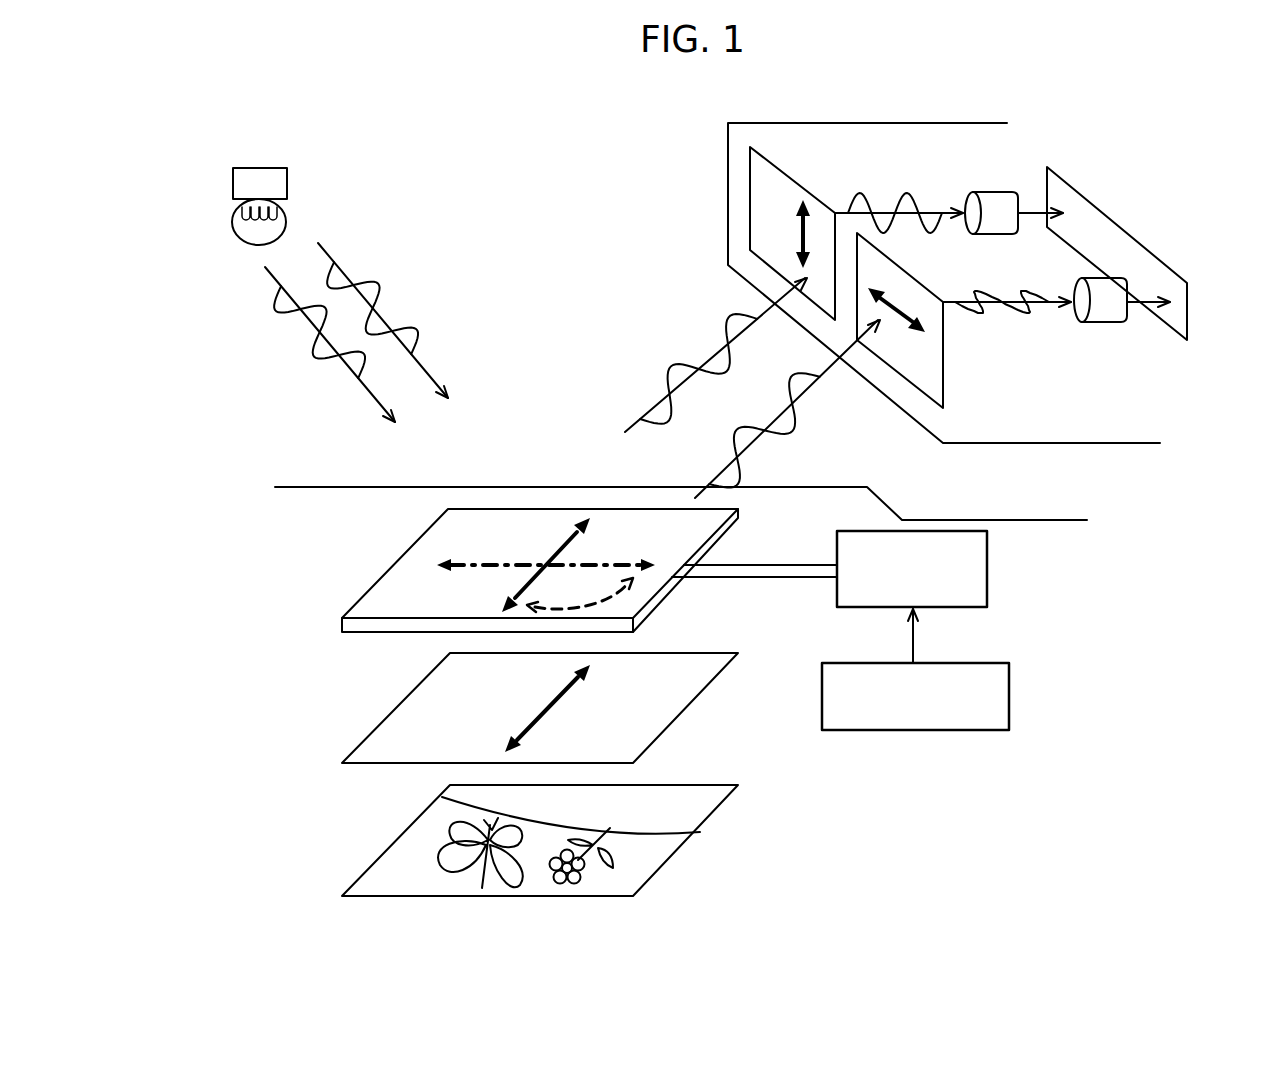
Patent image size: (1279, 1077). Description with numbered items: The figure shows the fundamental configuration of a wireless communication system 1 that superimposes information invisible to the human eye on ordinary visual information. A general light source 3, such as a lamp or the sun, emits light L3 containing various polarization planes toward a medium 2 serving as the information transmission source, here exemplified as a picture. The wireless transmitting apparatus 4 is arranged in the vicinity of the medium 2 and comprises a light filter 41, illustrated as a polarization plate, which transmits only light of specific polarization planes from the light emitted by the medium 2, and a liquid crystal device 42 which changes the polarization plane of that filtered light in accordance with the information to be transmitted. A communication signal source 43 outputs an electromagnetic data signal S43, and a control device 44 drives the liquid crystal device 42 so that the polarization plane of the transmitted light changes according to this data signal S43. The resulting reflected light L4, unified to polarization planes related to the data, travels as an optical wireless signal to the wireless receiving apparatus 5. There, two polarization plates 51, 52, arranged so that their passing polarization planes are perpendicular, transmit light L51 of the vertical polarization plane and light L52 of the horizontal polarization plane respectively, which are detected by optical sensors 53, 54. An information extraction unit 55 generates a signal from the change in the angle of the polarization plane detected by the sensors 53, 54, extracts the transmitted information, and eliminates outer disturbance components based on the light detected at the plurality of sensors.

The wireless communication system 1 is at (534, 86).
The medium 2 is at (362, 875).
The general light source 3 is at (258, 165).
The light including various polarization planes L3 is at (347, 258).
The wireless transmitting apparatus 4 is at (350, 563).
The light filter 41 is at (382, 722).
The liquid crystal device 42 is at (346, 610).
The communication signal source 43 is at (1010, 690).
The electromagnetic data signal S43 is at (914, 636).
The control device 44 is at (990, 565).
The light of specific polarization planes L4 is at (614, 411).
The wireless receiving apparatus 5 is at (742, 138).
The polarization plate 51 is at (821, 194).
The polarization plate 52 is at (890, 321).
The optical sensor 53 is at (963, 210).
The optical sensor 54 is at (1117, 278).
The information extraction unit 55 is at (1092, 198).
The light of vertical polarization plane L51 is at (905, 205).
The light of horizontal polarization plane L52 is at (974, 289).